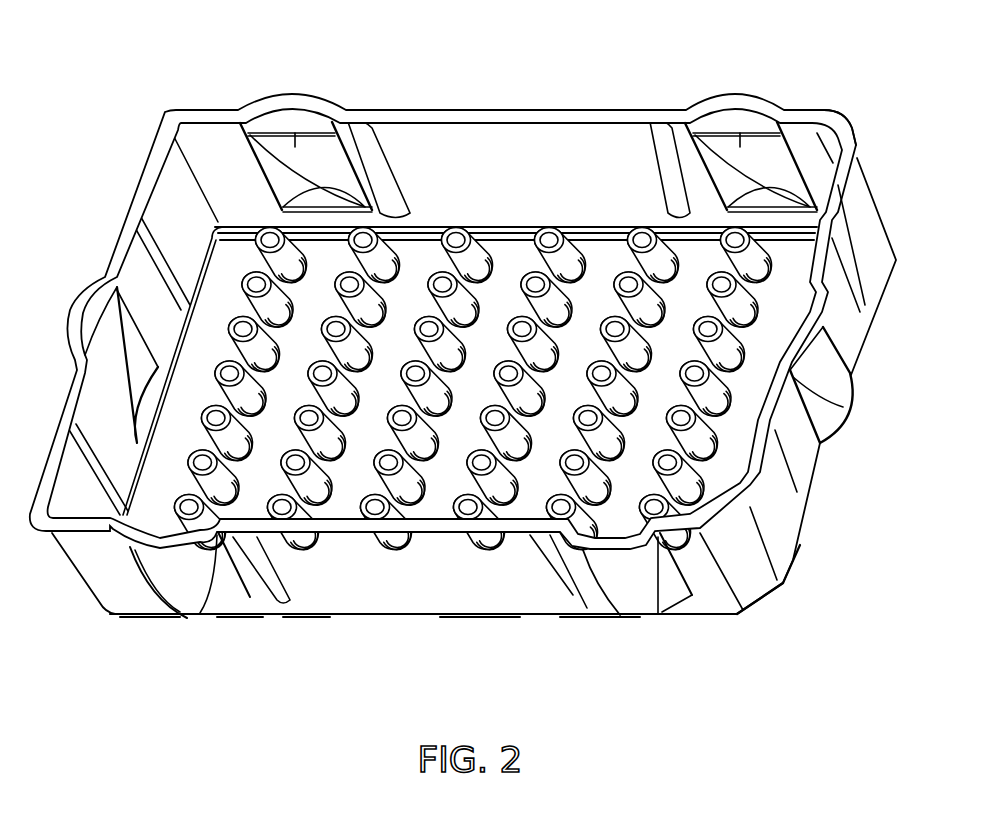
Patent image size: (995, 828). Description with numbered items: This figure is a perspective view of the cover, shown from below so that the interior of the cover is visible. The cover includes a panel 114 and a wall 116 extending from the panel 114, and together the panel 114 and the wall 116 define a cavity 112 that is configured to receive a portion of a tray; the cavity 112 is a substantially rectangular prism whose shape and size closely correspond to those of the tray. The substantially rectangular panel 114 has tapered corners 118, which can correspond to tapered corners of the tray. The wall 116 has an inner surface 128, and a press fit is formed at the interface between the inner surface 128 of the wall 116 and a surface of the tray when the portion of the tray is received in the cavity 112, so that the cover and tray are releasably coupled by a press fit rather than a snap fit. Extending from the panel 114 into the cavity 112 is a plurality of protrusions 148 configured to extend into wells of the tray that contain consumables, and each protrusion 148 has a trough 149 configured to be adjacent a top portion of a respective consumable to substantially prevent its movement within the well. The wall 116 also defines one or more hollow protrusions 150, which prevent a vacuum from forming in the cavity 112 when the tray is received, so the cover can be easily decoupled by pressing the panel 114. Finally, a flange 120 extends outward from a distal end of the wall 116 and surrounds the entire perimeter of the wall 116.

The cavity 112 is at (471, 343).
The panel 114 is at (433, 495).
The wall 116 is at (163, 180).
The tapered corners 118 is at (833, 130).
The flange 120 is at (503, 110).
The inner surface 128 is at (130, 278).
The protrusions 148 is at (380, 268).
The trough 149 is at (640, 232).
The hollow protrusions 150 is at (295, 147).